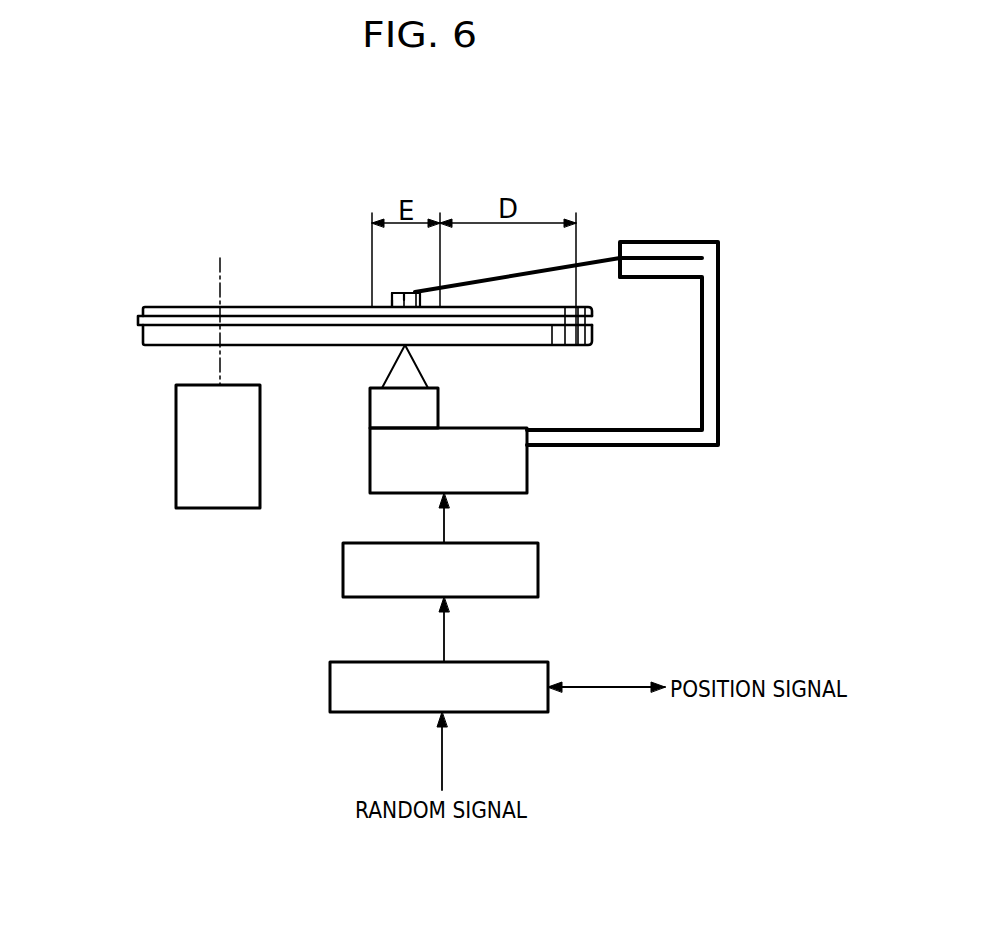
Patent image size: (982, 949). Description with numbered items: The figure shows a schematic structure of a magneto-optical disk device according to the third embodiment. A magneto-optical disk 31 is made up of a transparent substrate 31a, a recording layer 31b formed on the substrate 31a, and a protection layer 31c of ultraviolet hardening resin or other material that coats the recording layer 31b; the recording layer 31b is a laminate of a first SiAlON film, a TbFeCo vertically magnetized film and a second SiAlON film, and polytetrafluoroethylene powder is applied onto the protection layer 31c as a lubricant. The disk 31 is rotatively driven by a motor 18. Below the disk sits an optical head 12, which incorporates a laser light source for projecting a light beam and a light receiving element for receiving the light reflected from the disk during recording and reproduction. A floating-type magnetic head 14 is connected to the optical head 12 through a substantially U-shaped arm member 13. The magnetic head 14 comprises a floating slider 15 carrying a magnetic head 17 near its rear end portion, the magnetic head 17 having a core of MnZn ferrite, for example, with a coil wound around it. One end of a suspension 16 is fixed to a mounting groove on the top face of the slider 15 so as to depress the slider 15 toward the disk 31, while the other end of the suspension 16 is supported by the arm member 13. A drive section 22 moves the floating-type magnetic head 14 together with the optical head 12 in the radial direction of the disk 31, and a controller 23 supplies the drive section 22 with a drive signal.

The magneto-optical disk 31 is at (318, 343).
The transparent substrate 31a is at (150, 337).
The recording layer 31b is at (140, 320).
The protection layer 31c is at (150, 307).
The motor 18 is at (185, 490).
The floating-type magnetic head 14 is at (400, 283).
The magnetic head 17 is at (392, 296).
The floating slider 15 is at (392, 305).
The suspension 16 is at (590, 262).
The arm member 13 is at (708, 343).
The optical head 12 is at (425, 410).
The drive section 22 is at (540, 568).
The controller 23 is at (510, 662).